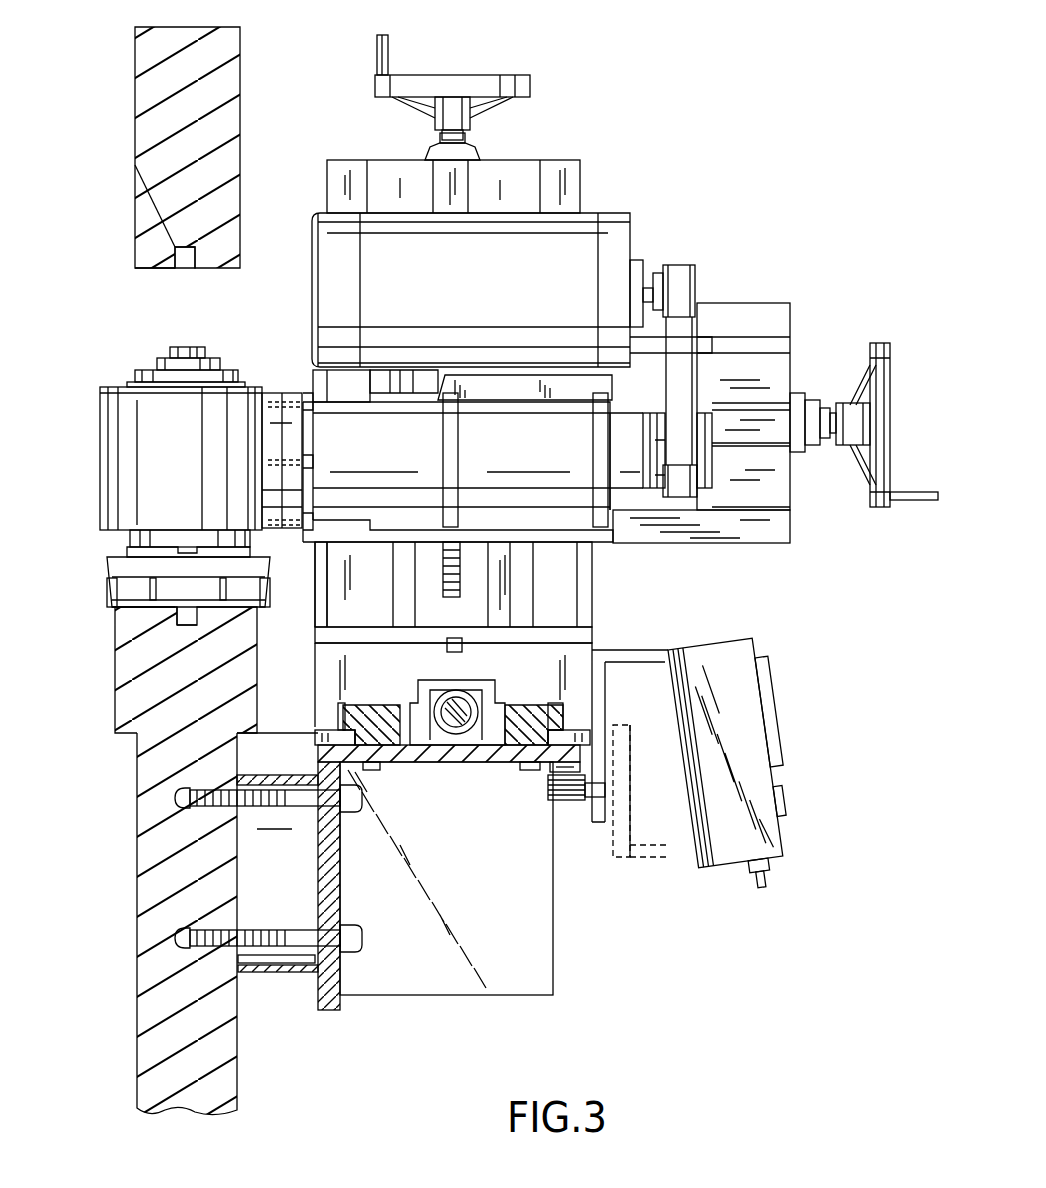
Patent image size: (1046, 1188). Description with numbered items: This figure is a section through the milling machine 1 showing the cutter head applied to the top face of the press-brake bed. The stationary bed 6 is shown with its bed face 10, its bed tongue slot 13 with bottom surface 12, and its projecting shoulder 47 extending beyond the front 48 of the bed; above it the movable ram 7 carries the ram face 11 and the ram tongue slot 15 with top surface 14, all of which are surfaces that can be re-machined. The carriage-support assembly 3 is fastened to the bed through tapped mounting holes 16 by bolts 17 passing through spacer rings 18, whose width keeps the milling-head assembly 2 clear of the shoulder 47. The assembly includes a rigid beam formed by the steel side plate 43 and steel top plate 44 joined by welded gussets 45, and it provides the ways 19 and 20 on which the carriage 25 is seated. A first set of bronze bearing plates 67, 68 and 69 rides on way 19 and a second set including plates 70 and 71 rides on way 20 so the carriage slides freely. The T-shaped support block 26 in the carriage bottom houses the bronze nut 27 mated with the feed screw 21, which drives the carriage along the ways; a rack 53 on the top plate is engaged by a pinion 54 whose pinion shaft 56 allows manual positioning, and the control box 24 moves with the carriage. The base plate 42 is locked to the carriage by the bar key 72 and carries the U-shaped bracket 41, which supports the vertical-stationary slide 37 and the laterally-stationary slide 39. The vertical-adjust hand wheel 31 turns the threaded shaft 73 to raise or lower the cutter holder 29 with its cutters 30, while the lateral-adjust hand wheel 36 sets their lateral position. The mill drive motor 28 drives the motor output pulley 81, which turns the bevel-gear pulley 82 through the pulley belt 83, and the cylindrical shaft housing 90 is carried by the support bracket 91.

The milling machine 1 is at (752, 185).
The milling-head assembly 2 is at (600, 195).
The carriage-support assembly 3 is at (570, 855).
The stationary bed 6 is at (137, 858).
The movable ram 7 is at (133, 163).
The bed face 10 is at (180, 600).
The ram face 11 is at (152, 268).
The bottom surface of bed tongue slot 12 is at (195, 635).
The bed tongue slot 13 is at (185, 625).
The top surface of ram tongue slot 14 is at (175, 243).
The ram tongue slot 15 is at (188, 262).
The mounting holes 16 is at (175, 797).
The bolts 17 is at (352, 812).
The spacer rings 18 is at (280, 975).
The way 19 is at (367, 727).
The way 20 is at (510, 735).
The feed screw 21 is at (456, 712).
The control box 24 is at (752, 730).
The carriage 25 is at (565, 665).
The T-shaped support block 26 is at (475, 730).
The bronze nut 27 is at (446, 722).
The mill drive motor 28 is at (583, 265).
The cutter holder 29 is at (178, 565).
The cutters 30 is at (222, 590).
The vertical-adjust hand wheel 31 is at (456, 75).
The lateral-adjust hand wheel 36 is at (885, 345).
The vertical-stationary slide 37 is at (555, 165).
The laterally-stationary slide 39 is at (772, 305).
The U-shaped bracket 41 is at (318, 575).
The base plate 42 is at (578, 640).
The steel side plate 43 is at (330, 1005).
The steel top plate 44 is at (585, 757).
The gussets 45 is at (535, 955).
The projecting shoulder 47 is at (232, 655).
The front of bed 48 is at (240, 870).
The rack 53 is at (583, 768).
The pinion 54 is at (575, 812).
The pinion shaft 56 is at (585, 790).
The bronze bearing plate 67 is at (320, 733).
The bronze bearing plate 68 is at (338, 715).
The bronze bearing plate 69 is at (367, 705).
The bronze bearing plate 70 is at (520, 705).
The bronze bearing plate 71 is at (568, 732).
The bar key 72 is at (447, 650).
The threaded shaft 73 is at (436, 135).
The motor output pulley 81 is at (700, 278).
The bevel-gear pulley 82 is at (700, 497).
The pulley belt 83 is at (683, 345).
The cylindrical shaft housing 90 is at (455, 455).
The support bracket 91 is at (593, 435).